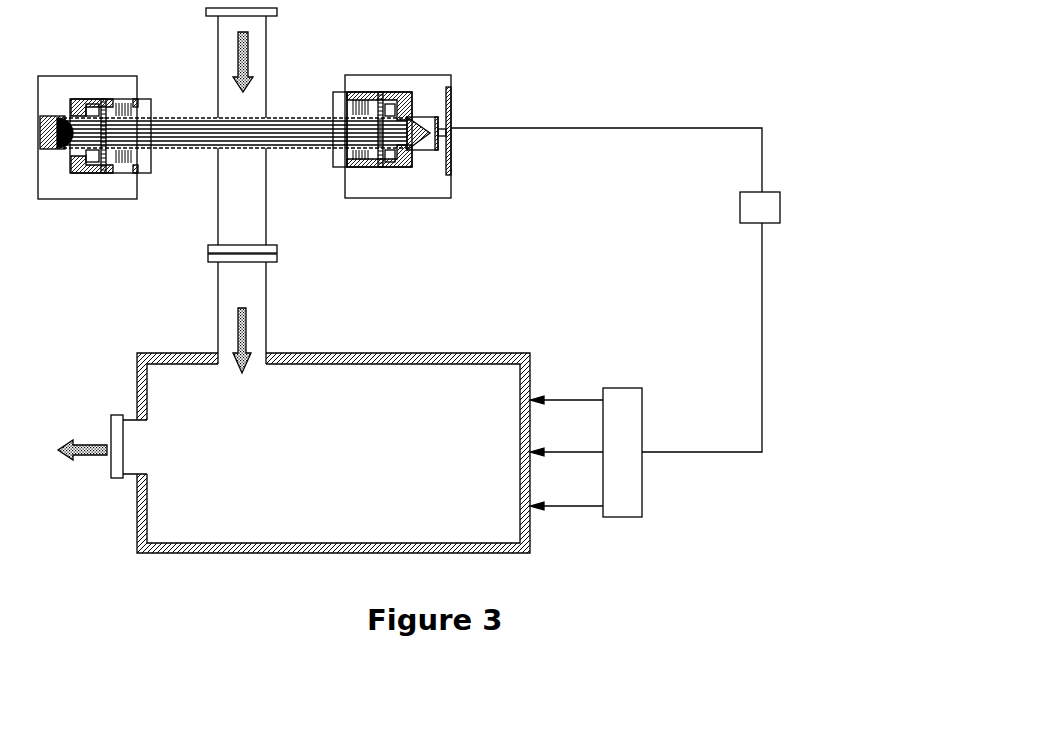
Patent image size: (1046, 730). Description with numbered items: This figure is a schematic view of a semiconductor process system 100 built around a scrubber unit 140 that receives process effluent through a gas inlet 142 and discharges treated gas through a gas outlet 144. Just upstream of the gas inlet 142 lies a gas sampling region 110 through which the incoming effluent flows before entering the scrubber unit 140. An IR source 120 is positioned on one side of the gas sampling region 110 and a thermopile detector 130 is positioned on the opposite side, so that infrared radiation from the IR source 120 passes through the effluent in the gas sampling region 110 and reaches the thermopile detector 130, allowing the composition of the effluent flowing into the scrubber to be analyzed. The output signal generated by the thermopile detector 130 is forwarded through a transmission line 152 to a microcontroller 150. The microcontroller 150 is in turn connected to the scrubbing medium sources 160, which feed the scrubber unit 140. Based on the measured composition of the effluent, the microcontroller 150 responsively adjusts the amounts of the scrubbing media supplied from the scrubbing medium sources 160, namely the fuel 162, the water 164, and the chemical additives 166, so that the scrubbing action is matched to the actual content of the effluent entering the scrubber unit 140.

The semiconductor process system 100 is at (786, 76).
The gas sampling region 110 is at (265, 67).
The IR source 120 is at (93, 185).
The thermopile detector 130 is at (411, 178).
The scrubber unit 140 is at (333, 453).
The gas inlet 142 is at (267, 302).
The gas outlet 144 is at (110, 470).
The microcontroller 150 is at (760, 207).
The transmission line 152 is at (582, 128).
The scrubbing medium sources 160 is at (622, 452).
The scrubbing medium (fuel) 162 is at (563, 397).
The scrubbing medium (water) 164 is at (557, 448).
The scrubbing medium (chemical additives) 166 is at (558, 502).